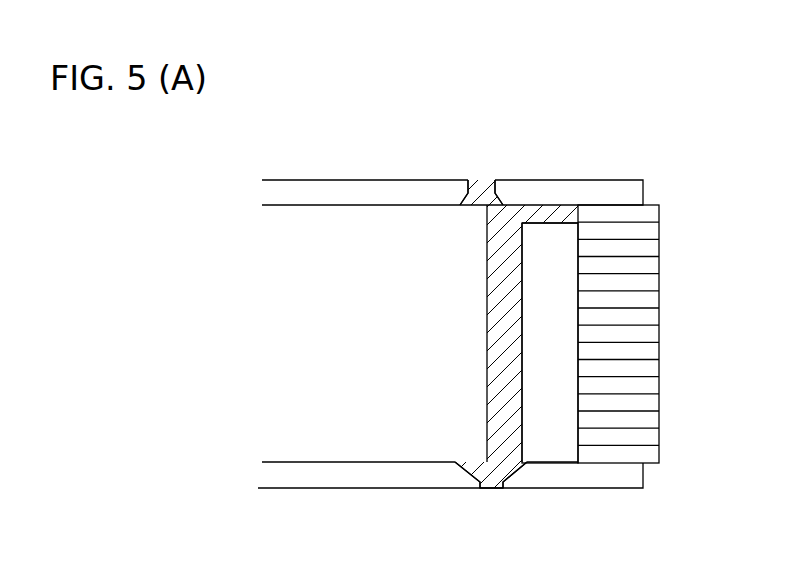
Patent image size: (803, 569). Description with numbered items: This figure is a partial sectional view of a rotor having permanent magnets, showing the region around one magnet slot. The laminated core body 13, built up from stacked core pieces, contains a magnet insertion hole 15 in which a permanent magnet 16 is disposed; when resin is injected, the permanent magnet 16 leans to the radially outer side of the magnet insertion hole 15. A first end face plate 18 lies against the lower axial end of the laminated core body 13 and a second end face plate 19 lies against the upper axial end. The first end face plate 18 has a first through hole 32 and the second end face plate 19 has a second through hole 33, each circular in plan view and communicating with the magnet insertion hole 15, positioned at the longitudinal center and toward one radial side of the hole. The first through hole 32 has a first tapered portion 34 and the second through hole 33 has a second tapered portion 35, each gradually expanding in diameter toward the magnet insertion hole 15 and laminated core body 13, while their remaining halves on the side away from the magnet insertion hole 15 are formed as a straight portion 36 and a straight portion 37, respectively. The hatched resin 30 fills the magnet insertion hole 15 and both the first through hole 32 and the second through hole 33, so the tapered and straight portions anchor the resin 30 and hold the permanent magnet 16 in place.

The laminated core body 13 is at (677, 378).
The magnet insertion hole 15 is at (493, 369).
The permanent magnet 16 is at (552, 354).
The first end face plate 18 is at (605, 476).
The second end face plate 19 is at (605, 192).
The resin 30 is at (471, 331).
The first through hole 32 is at (500, 511).
The second through hole 33 is at (490, 153).
The first tapered portion 34 is at (512, 473).
The second tapered portion 35 is at (470, 198).
The straight portion 36 is at (478, 485).
The straight portion 37 is at (488, 197).